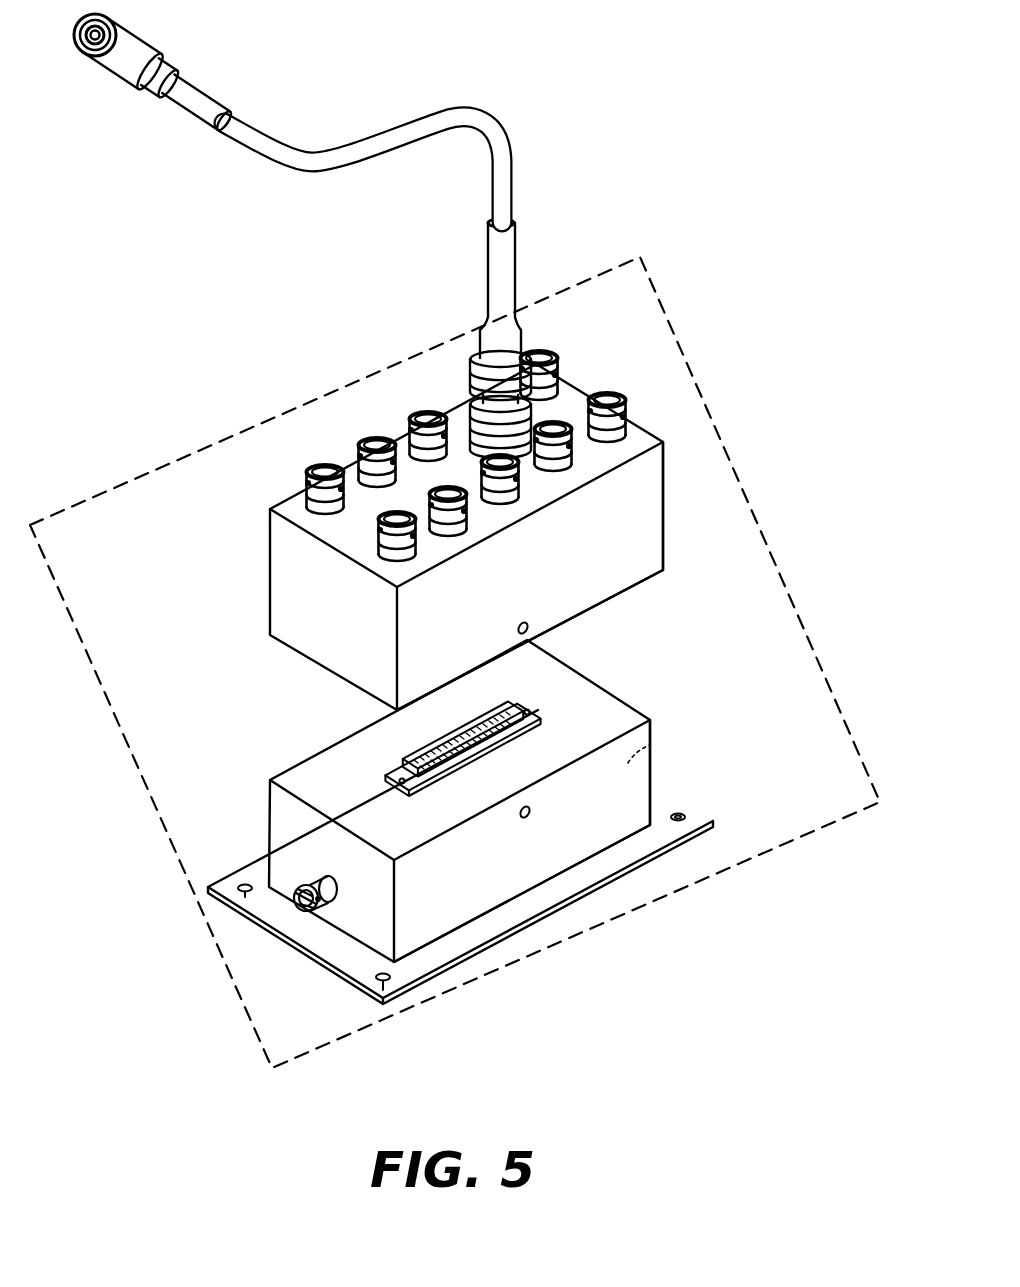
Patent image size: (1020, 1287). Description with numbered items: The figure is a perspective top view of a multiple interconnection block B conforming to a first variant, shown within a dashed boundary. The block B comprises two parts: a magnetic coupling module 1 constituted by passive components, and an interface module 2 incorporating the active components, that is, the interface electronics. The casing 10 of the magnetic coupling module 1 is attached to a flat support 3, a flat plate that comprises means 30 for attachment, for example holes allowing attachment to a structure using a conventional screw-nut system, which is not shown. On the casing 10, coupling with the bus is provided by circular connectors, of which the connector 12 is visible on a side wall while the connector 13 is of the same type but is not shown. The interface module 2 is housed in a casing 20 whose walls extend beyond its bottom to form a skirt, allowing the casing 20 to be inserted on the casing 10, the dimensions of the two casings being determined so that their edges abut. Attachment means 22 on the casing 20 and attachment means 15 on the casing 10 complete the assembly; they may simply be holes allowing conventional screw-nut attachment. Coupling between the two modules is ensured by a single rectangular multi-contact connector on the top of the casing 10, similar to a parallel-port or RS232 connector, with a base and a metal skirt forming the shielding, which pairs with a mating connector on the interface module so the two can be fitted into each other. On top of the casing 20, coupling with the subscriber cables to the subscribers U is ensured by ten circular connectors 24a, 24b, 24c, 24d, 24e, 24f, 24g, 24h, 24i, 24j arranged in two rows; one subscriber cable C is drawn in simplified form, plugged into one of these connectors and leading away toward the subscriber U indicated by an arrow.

The magnetic coupling module 1 is at (288, 762).
The interface module 2 is at (262, 569).
The flat support 3 is at (437, 958).
The casing of the magnetic coupling module 10 is at (508, 878).
The connector for coupling with the bus 12 is at (305, 878).
The connector for coupling with the bus 13 is at (658, 744).
The attachment means on the casing of the magnetic coupling module 15 is at (530, 813).
The casing of the interface module 20 is at (650, 540).
The attachment means on the casing of the interface module 22 is at (530, 629).
The circular connector 24a is at (309, 470).
The circular connector 24b is at (361, 442).
The circular connector 24c is at (412, 416).
The circular connector 24d is at (460, 362).
The circular connector 24e is at (538, 350).
The circular connector 24f is at (382, 518).
The circular connector 24g is at (431, 492).
The circular connector 24h is at (462, 411).
The circular connector 24i is at (553, 422).
The circular connector 24j is at (627, 392).
The means for attachment 30 is at (244, 893).
The multiple interconnection block B is at (68, 505).
The subscriber cable C is at (515, 126).
The subscriber U is at (132, 127).